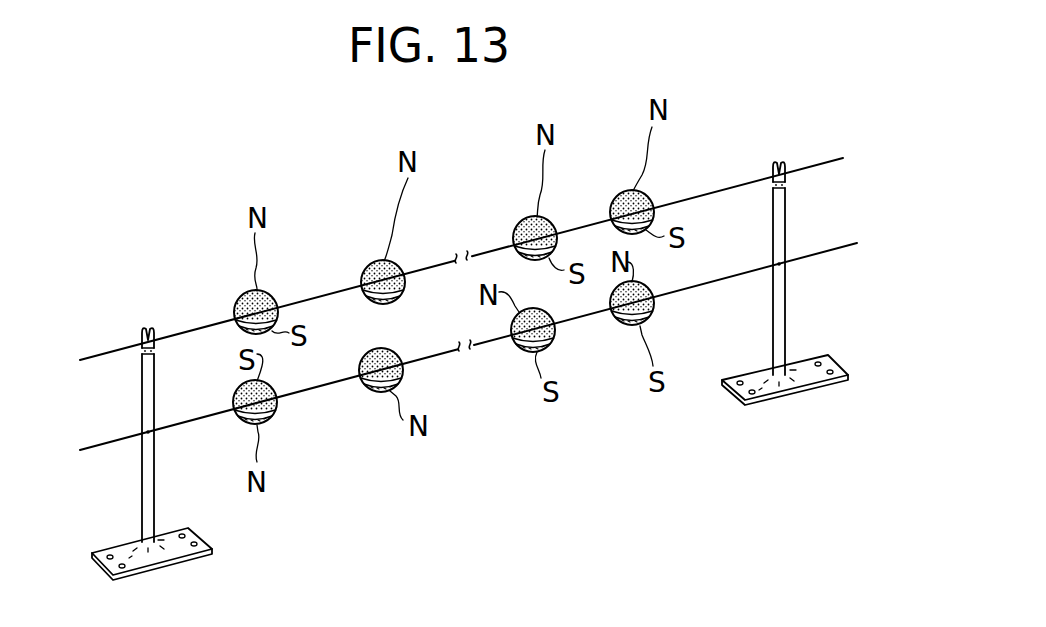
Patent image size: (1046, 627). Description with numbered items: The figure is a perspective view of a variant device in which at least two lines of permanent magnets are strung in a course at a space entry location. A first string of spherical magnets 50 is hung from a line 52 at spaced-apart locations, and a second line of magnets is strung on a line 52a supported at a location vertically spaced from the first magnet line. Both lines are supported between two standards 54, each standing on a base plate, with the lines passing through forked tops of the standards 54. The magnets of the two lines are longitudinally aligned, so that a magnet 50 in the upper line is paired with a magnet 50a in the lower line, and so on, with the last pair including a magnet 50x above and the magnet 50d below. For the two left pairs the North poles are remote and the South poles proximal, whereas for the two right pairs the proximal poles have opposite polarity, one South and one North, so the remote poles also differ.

The spherical magnet 50 is at (238, 330).
The magnet 50a is at (237, 422).
The magnet 50x is at (676, 184).
The magnet 50d is at (655, 296).
The line 52 is at (317, 297).
The line 52a is at (326, 386).
The standard 54 is at (786, 330).